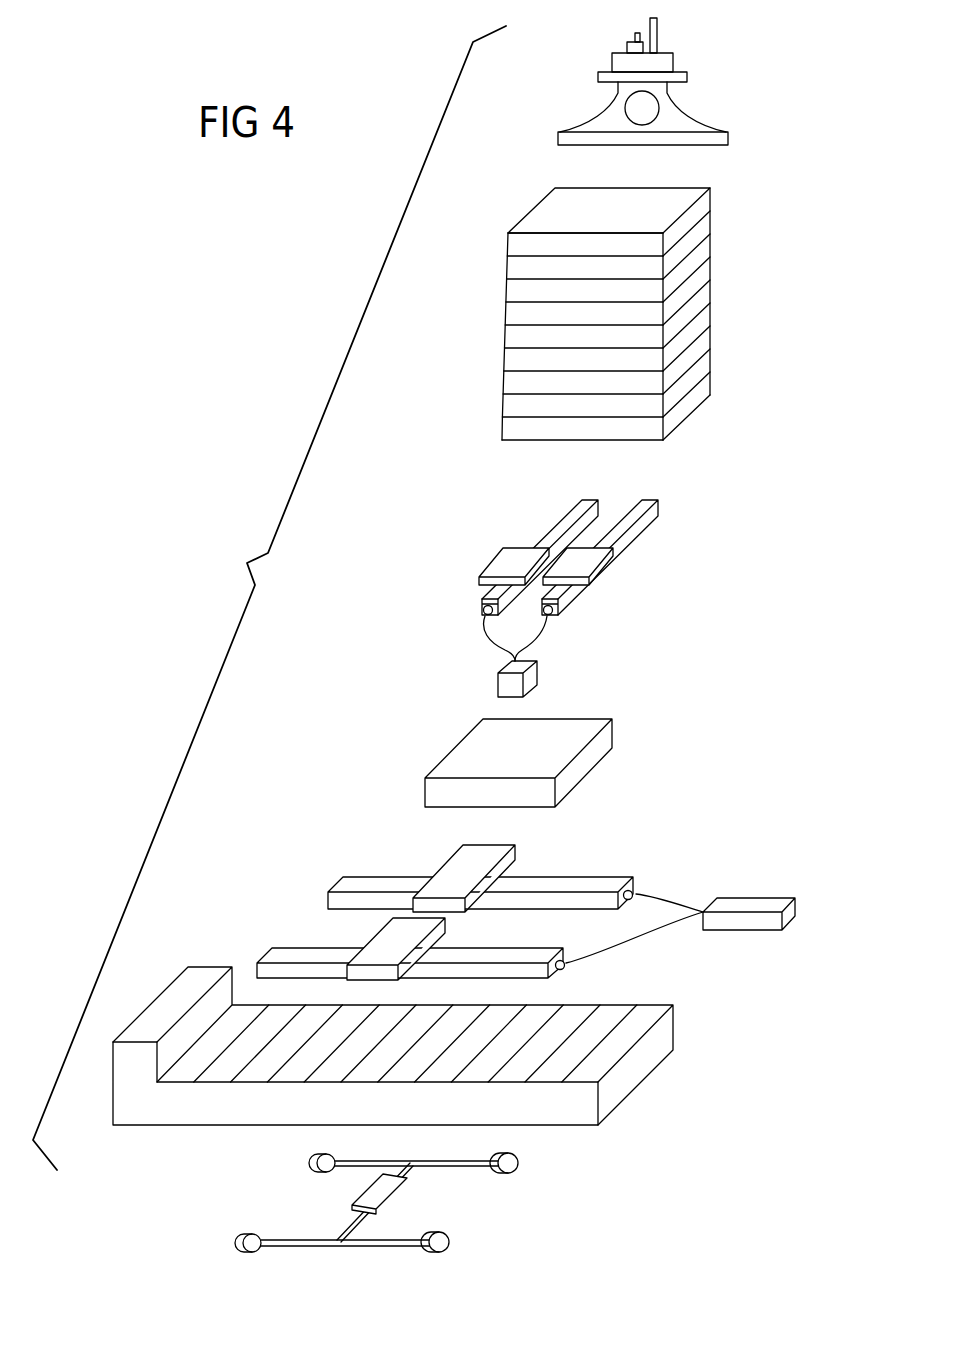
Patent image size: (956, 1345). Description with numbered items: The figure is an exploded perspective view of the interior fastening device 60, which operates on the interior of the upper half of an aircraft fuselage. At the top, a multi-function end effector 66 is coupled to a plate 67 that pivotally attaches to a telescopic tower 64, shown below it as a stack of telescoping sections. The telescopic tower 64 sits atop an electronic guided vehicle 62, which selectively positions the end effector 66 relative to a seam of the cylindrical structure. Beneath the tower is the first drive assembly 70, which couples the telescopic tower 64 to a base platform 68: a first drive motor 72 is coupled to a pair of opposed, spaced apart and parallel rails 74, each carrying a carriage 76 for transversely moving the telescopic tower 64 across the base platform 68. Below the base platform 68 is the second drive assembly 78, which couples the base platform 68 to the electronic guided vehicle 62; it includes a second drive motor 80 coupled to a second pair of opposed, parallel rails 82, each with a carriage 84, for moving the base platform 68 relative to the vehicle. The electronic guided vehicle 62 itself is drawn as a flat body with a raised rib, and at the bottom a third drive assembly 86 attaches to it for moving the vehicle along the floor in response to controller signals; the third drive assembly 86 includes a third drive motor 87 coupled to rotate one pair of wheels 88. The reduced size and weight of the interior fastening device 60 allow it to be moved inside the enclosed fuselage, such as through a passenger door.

The interior fastening device 60 is at (358, 670).
The electronic guided vehicle 62 is at (647, 1057).
The telescopic tower 64 is at (711, 312).
The multi-function end effector 66 is at (673, 58).
The plate 67 is at (558, 138).
The base platform 68 is at (612, 742).
The first drive assembly 70 is at (633, 593).
The first drive motor 72 is at (536, 668).
The rails 74 is at (657, 498).
The carriage 76 is at (560, 565).
The second drive assembly 78 is at (262, 900).
The second drive motor 80 is at (793, 925).
The rails 82 is at (553, 950).
The carriage 84 is at (452, 873).
The third drive assembly 86 is at (227, 1198).
The third drive motor 87 is at (407, 1180).
The wheels 88 is at (443, 1252).